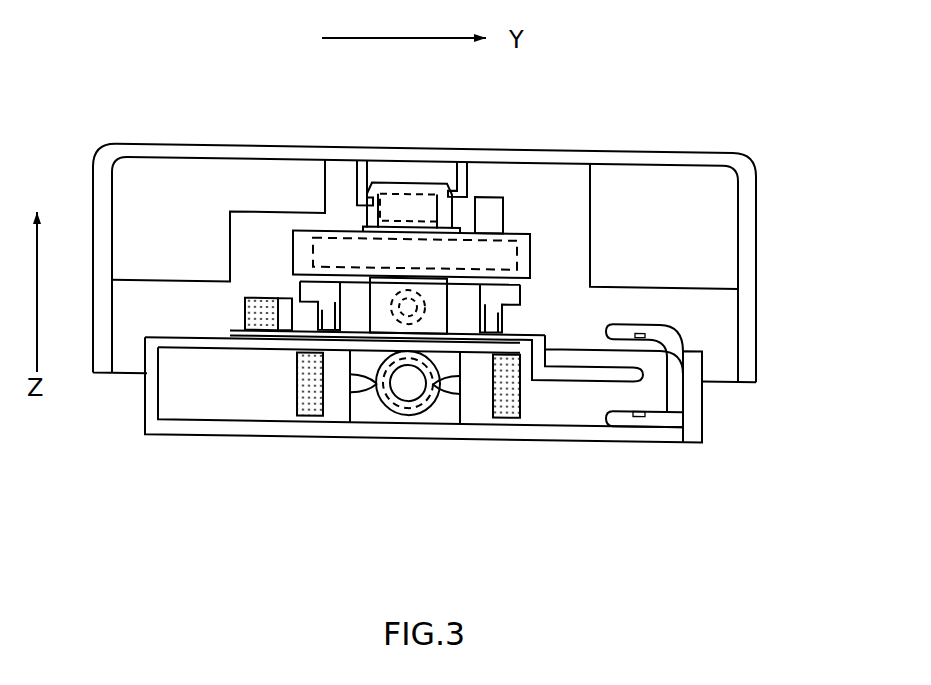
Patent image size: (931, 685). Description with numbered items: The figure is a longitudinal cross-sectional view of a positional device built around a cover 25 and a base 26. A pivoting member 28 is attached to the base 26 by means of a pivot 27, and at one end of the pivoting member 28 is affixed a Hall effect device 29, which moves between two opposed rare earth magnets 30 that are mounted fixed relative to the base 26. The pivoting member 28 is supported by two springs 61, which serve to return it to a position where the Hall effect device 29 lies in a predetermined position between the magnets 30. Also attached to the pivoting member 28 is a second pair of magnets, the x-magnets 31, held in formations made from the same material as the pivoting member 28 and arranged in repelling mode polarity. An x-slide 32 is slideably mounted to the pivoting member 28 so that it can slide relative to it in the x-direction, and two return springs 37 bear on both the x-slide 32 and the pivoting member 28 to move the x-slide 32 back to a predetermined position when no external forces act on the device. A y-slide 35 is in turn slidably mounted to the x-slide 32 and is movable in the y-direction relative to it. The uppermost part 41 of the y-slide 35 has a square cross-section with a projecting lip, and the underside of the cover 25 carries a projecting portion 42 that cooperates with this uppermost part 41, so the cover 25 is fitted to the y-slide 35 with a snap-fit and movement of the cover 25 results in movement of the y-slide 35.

The cover 25 is at (747, 216).
The base 26 is at (688, 432).
The pivot 27 is at (410, 386).
The pivoting member 28 is at (224, 340).
The Hall effect device 29 is at (645, 365).
The rare earth magnets 30 is at (638, 311).
The x-magnets 31 is at (236, 310).
The x-slide 32 is at (538, 259).
The y-slide 35 is at (386, 209).
The return springs 37 is at (400, 295).
The uppermost part of the y-slide 41 is at (412, 170).
The projecting portion 42 is at (352, 173).
The springs 61 is at (303, 410).